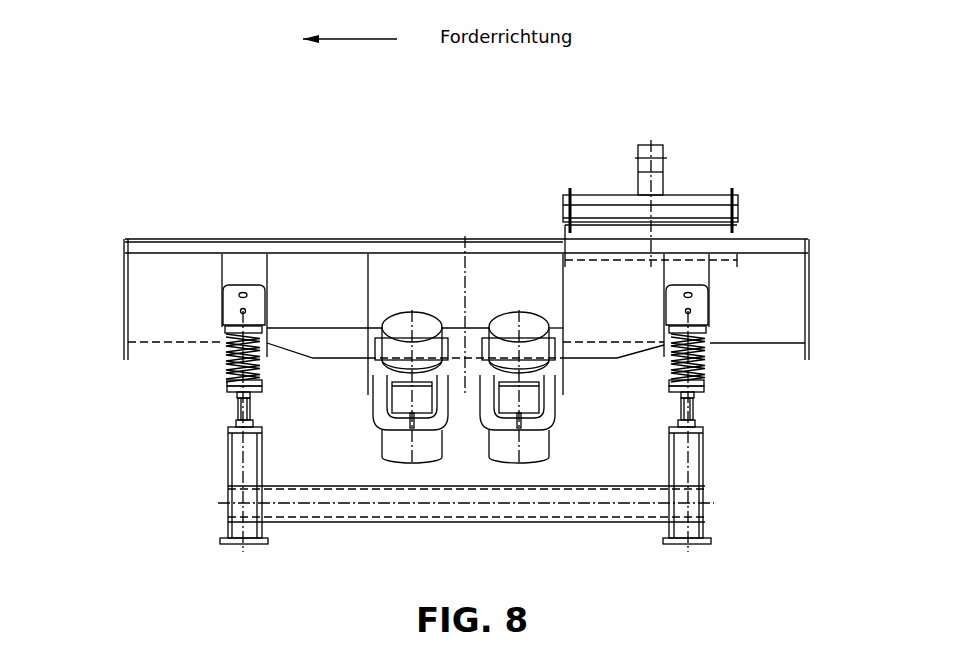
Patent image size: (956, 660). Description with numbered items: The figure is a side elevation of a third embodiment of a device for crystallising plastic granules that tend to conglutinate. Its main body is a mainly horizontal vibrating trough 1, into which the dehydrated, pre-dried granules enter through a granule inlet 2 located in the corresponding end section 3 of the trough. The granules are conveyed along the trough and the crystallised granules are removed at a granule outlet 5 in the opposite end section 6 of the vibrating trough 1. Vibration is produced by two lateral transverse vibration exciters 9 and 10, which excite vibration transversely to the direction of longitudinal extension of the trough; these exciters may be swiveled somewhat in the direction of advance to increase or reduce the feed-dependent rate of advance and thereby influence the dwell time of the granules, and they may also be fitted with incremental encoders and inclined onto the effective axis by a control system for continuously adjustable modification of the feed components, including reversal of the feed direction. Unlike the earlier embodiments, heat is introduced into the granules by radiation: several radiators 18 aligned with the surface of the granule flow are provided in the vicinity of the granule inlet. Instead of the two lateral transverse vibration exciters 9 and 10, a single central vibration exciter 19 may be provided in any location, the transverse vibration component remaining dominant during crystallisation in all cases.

The vibrating trough 1 is at (326, 265).
The granule inlet 2 is at (756, 281).
The end section 3 is at (786, 330).
The granule outlet 5 is at (123, 283).
The opposite end section 6 is at (147, 323).
The vibration exciter 9 is at (422, 315).
The vibration exciter 10 is at (514, 316).
The radiator 18 is at (595, 203).
The central vibration exciter 19 is at (365, 378).